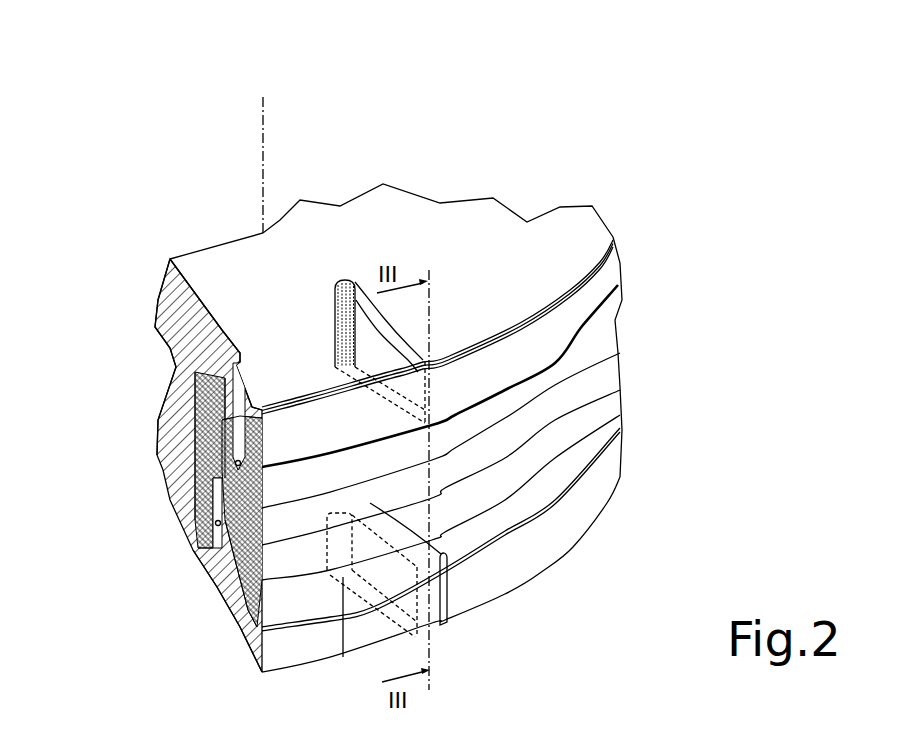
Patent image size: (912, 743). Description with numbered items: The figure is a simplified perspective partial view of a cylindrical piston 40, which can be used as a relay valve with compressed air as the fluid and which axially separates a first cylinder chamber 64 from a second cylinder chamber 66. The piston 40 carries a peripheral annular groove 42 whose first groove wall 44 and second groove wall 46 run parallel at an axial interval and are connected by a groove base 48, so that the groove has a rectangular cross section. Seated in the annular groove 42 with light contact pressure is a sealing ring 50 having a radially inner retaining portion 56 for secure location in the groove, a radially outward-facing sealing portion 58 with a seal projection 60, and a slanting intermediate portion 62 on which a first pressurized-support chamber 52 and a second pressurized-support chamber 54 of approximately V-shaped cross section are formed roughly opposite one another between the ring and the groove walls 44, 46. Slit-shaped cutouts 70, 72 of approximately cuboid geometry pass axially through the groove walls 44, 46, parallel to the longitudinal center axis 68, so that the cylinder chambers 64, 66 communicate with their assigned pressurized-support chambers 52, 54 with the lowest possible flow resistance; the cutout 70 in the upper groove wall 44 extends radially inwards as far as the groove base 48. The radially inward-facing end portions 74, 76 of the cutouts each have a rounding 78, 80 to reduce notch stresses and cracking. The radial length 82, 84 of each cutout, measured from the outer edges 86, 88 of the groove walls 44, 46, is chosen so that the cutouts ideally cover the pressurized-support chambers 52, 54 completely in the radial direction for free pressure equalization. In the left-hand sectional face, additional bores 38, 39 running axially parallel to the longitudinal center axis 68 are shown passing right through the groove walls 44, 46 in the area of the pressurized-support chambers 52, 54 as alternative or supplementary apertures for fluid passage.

The bore 38 is at (205, 328).
The bore 39 is at (220, 555).
The piston 40 is at (590, 120).
The annular groove 42 is at (240, 490).
The first groove wall 44 is at (207, 407).
The second groove wall 46 is at (237, 605).
The groove base 48 is at (213, 442).
The sealing ring 50 is at (645, 378).
The first pressurized-support chamber 52 is at (233, 517).
The second pressurized-support chamber 54 is at (223, 547).
The retaining portion 56 is at (207, 433).
The sealing portion 58 is at (247, 627).
The seal projection 60 is at (607, 413).
The intermediate portion 62 is at (238, 465).
The first cylinder chamber 64 is at (548, 184).
The second cylinder chamber 66 is at (236, 674).
The longitudinal center axis 68 is at (263, 106).
The cutout 70 is at (455, 385).
The cutout 72 is at (452, 589).
The end portion 74 is at (343, 262).
The end portion 76 is at (331, 592).
The rounding 78 is at (357, 281).
The rounding 80 is at (343, 570).
The radial length 82 is at (313, 293).
The radial length 84 is at (350, 503).
The outer edge 86 is at (612, 264).
The outer edge 88 is at (610, 460).